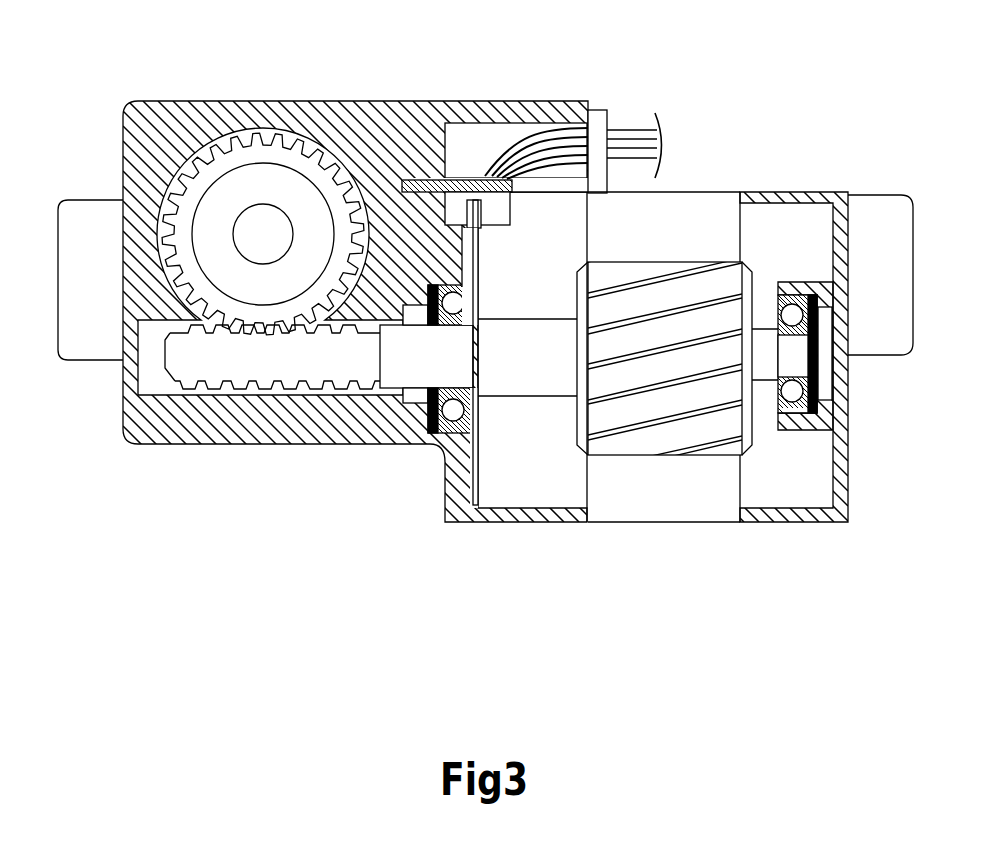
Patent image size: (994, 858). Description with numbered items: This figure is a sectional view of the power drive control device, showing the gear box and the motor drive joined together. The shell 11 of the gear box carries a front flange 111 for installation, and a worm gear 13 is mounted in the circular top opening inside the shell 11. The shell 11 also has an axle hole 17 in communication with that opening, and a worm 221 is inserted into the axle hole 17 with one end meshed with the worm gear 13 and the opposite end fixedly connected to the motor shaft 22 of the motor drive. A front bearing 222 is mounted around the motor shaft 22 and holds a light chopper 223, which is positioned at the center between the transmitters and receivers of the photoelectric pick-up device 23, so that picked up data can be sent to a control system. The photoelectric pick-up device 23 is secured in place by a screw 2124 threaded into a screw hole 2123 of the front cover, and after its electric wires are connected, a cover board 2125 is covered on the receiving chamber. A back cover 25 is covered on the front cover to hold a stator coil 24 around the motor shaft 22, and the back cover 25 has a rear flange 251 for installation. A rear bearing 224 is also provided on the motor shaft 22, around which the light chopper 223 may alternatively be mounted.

The shell 11 is at (267, 447).
The front flange 111 is at (77, 213).
The worm gear 13 is at (248, 155).
The axle hole 17 is at (145, 384).
The worm 221 is at (317, 358).
The motor shaft 22 is at (552, 357).
The front bearing 222 is at (475, 430).
The light chopper 223 is at (480, 274).
The photoelectric pick-up device 23 is at (490, 205).
The screw hole 2123 is at (516, 150).
The screw 2124 is at (512, 186).
The cover board 2125 is at (600, 128).
The stator coil 24 is at (668, 505).
The rear bearing 224 is at (778, 422).
The back cover 25 is at (840, 522).
The rear flange 251 is at (890, 345).